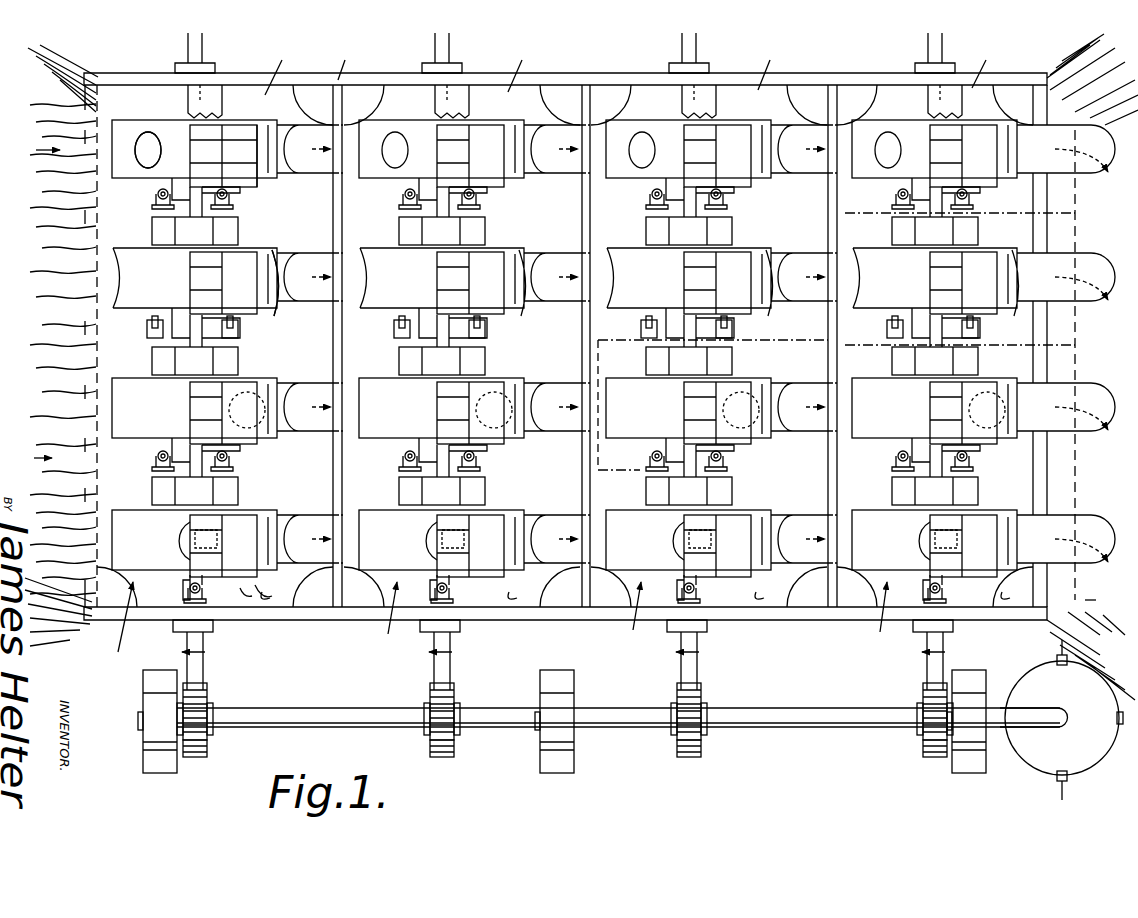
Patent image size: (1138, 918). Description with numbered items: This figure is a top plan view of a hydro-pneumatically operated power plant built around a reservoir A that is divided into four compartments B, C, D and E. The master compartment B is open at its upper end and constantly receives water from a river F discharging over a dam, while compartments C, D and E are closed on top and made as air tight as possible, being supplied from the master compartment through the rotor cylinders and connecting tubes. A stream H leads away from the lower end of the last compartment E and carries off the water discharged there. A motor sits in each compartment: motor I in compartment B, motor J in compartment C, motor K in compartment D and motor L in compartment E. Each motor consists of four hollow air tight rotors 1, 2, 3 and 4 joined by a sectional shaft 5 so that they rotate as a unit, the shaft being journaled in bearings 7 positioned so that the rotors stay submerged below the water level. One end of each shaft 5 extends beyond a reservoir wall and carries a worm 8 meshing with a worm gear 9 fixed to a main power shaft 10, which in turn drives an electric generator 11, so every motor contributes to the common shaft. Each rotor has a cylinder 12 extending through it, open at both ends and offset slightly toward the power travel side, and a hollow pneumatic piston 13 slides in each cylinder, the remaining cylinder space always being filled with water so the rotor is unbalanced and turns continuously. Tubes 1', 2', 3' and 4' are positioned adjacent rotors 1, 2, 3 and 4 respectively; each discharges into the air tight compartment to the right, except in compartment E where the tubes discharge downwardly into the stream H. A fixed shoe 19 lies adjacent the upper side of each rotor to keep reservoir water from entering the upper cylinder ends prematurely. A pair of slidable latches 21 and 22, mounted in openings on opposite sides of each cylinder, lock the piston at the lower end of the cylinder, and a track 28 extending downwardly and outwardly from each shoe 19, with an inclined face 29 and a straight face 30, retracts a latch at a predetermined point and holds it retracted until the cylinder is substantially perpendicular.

The rotor 1 is at (194, 542).
The rotor 2 is at (583, 434).
The rotor 3 is at (196, 288).
The rotor 4 is at (194, 157).
The tube 1' is at (311, 539).
The tube 2' is at (311, 407).
The tube 3' is at (311, 277).
The tube 4' is at (311, 149).
The sectional shaft 5 is at (195, 668).
The bearings 7 is at (202, 64).
The worm 8 is at (205, 712).
The worm gear 9 is at (207, 750).
The main power shaft 10 is at (326, 712).
The electric generator 11 is at (1061, 720).
The cylinder 12 is at (150, 133).
The pneumatic piston 13 is at (276, 300).
The fixed shoe 19 is at (236, 388).
The latch 21 is at (157, 201).
The latch 22 is at (228, 201).
The track 28 is at (218, 188).
The inclined face 29 is at (260, 584).
The straight face 30 is at (245, 600).
The reservoir A is at (346, 57).
The master compartment B is at (278, 65).
The compartment C is at (522, 63).
The compartment D is at (769, 62).
The compartment E is at (984, 61).
The river F is at (33, 150).
The stream H is at (1101, 600).
The motor I is at (116, 624).
The motor J is at (384, 621).
The motor K is at (630, 622).
The motor L is at (876, 621).